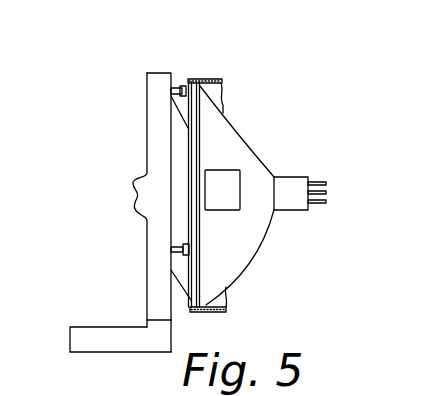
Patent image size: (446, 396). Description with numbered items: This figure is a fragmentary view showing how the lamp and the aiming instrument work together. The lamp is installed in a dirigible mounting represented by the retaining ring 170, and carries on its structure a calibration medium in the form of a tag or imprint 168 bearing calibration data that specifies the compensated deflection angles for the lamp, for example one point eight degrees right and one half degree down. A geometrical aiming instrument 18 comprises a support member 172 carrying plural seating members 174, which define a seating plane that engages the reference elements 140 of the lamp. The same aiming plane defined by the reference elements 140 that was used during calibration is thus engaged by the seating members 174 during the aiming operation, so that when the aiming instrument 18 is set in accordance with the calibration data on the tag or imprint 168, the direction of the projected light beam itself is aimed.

The geometrical aiming instrument 18 is at (96, 325).
The reference elements 140 is at (186, 81).
The tag or imprint 168 is at (230, 169).
The retaining ring 170 is at (206, 79).
The support member 172 is at (147, 120).
The seating members 174 is at (181, 86).